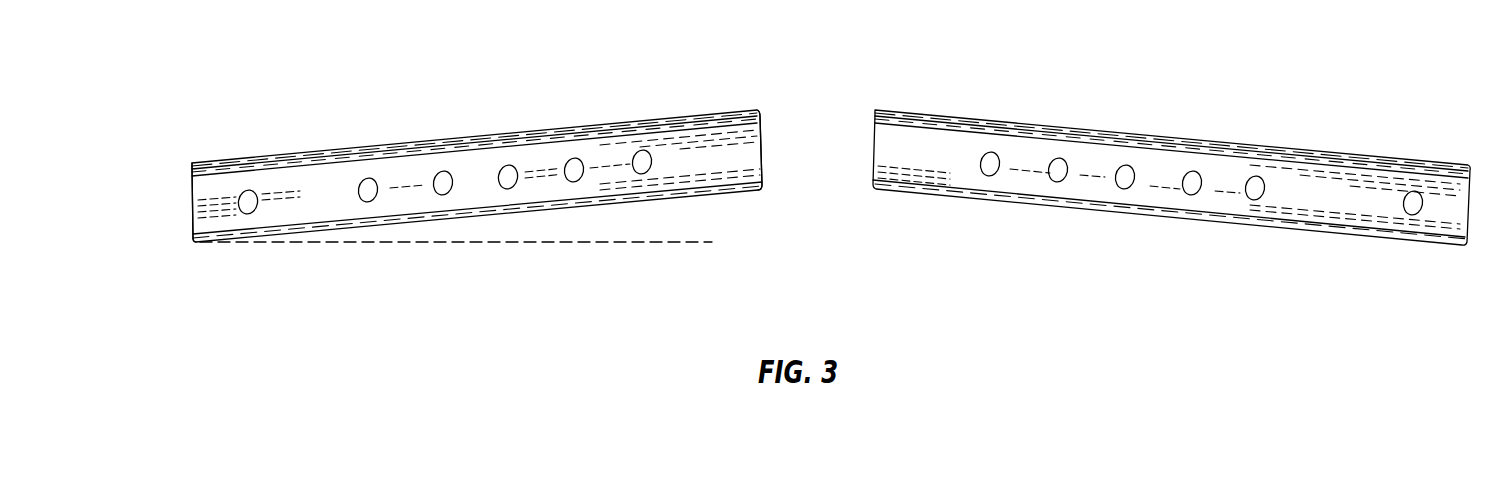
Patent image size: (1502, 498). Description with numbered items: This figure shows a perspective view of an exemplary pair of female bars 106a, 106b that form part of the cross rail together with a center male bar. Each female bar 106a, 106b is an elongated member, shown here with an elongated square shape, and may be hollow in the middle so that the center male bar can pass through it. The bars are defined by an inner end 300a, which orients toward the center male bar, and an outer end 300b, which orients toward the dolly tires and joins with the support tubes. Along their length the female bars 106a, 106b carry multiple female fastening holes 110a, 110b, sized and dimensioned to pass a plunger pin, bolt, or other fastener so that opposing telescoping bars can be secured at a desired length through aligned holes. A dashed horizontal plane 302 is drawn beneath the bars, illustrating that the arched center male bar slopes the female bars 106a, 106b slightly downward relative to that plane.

The female bar 106a is at (346, 74).
The female bar 106b is at (1297, 73).
The female fastening hole 110a is at (446, 182).
The female fastening hole 110b is at (1186, 182).
The inner end 300a is at (763, 140).
The outer end 300b is at (192, 193).
The horizontal plane 302 is at (691, 243).